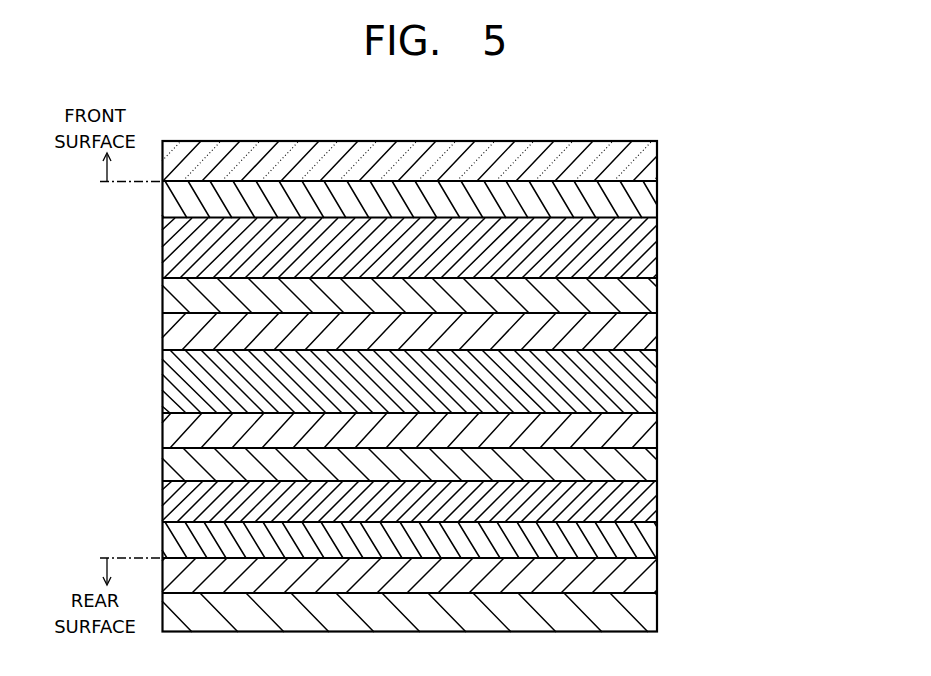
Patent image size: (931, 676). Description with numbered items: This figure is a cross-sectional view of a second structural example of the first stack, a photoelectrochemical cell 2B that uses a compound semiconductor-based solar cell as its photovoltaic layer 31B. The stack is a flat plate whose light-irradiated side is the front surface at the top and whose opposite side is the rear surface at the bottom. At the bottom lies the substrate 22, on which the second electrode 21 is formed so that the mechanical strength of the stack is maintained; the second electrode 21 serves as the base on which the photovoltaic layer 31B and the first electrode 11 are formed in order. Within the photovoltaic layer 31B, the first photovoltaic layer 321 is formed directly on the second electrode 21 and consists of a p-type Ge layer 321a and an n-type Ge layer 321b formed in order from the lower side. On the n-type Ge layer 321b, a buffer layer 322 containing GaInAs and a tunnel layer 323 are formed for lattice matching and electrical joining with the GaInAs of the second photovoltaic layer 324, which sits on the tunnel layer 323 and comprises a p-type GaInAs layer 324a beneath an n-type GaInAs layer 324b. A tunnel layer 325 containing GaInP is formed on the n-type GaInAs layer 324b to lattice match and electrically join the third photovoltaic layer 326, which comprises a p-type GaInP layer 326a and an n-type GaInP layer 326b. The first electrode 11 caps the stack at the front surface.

The first stack 2B is at (509, 353).
The first electrode 11 is at (632, 157).
The photovoltaic layer 31B is at (509, 369).
The third photovoltaic layer 326 is at (481, 229).
The n-type GaInP layer 326b is at (632, 195).
The p-type GaInP layer 326a is at (632, 250).
The tunnel layer 325 is at (632, 296).
The second photovoltaic layer 324 is at (481, 363).
The n-type GaInAs layer 324b is at (632, 329).
The p-type GaInAs layer 324a is at (632, 380).
The tunnel layer 323 is at (632, 431).
The buffer layer 322 is at (632, 464).
The first photovoltaic layer 321 is at (481, 519).
The n-type Ge layer 321b is at (632, 500).
The p-type Ge layer 321a is at (632, 540).
The second electrode 21 is at (632, 575).
The substrate 22 is at (632, 612).